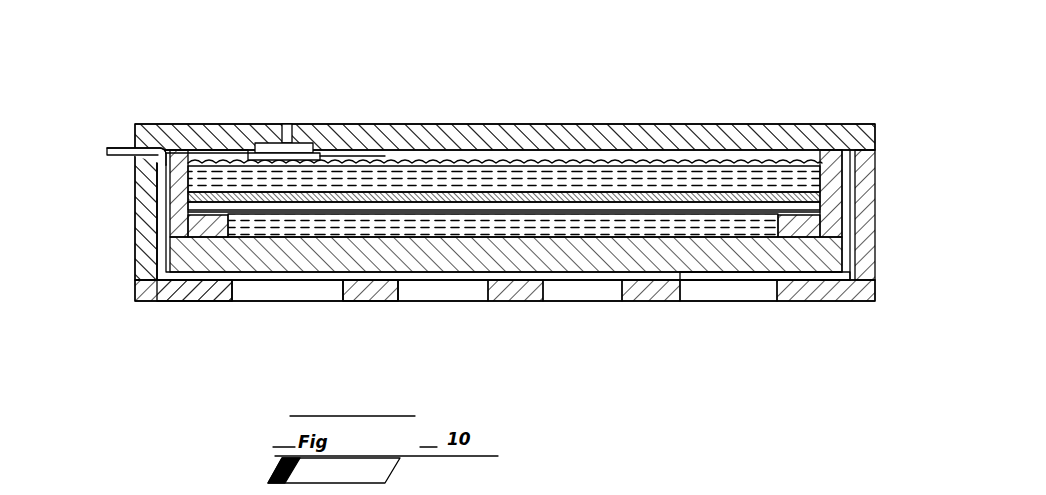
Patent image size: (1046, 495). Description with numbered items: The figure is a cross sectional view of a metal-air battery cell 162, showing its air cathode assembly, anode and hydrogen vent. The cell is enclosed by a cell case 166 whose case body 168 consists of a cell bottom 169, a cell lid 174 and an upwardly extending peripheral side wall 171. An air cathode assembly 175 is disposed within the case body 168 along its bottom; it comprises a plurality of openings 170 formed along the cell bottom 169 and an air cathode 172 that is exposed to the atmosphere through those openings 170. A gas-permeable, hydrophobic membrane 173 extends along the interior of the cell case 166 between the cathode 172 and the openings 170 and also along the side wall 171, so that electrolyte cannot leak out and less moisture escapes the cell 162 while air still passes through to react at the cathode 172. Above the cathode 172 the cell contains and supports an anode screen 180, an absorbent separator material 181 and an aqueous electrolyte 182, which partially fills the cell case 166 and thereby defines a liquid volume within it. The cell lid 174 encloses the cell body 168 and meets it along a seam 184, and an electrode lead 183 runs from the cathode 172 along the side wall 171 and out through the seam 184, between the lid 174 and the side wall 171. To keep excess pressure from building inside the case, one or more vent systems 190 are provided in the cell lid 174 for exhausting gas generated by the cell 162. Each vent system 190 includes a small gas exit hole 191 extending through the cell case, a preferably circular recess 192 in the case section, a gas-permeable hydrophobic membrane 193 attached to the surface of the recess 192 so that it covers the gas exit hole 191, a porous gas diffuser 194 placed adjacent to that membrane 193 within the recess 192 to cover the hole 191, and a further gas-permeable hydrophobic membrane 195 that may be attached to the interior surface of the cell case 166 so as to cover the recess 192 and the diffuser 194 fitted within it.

The metal-air battery cell 162 is at (803, 72).
The cell case 166 is at (110, 270).
The case body 168 is at (137, 292).
The cell bottom 169 is at (172, 296).
The openings 170 is at (292, 300).
The peripheral side wall 171 is at (136, 223).
The air cathode 172 is at (833, 250).
The gas-permeable hydrophobic membrane 173 is at (760, 272).
The cell lid 174 is at (618, 123).
The air cathode assembly 175 is at (381, 318).
The anode screen 180 is at (683, 193).
The absorbent separator material 181 is at (190, 210).
The electrolyte 182 is at (498, 163).
The electrode lead 183 is at (107, 148).
The seam 184 is at (134, 148).
The vent system 190 is at (308, 96).
The gas exit hole 191 is at (289, 126).
The recess 192 is at (348, 148).
The gas-permeable hydrophobic membrane 193 is at (232, 142).
The porous gas diffuser 194 is at (193, 140).
The gas-permeable hydrophobic membrane 195 is at (383, 153).